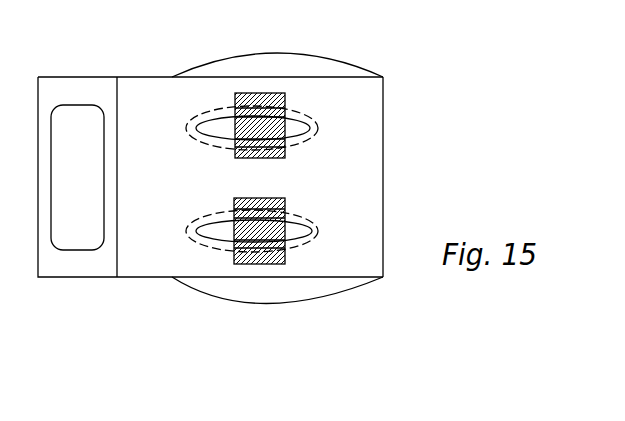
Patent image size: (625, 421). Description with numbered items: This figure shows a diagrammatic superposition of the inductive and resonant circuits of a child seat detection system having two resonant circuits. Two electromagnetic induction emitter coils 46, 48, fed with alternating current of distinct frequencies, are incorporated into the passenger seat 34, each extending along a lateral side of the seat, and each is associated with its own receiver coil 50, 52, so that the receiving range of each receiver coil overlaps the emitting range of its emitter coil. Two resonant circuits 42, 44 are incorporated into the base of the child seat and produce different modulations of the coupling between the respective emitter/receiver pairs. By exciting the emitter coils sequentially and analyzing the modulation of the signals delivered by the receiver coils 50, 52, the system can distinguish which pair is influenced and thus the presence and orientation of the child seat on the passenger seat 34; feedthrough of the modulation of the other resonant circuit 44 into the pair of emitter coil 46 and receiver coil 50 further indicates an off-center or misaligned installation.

The passenger seat 34 is at (147, 245).
The resonant circuit 42 is at (257, 93).
The second resonant circuit 44 is at (272, 264).
The emitter coil 46 is at (317, 137).
The emitter coil 48 is at (300, 237).
The receiver coil 50 is at (304, 112).
The receiver coil 52 is at (310, 217).